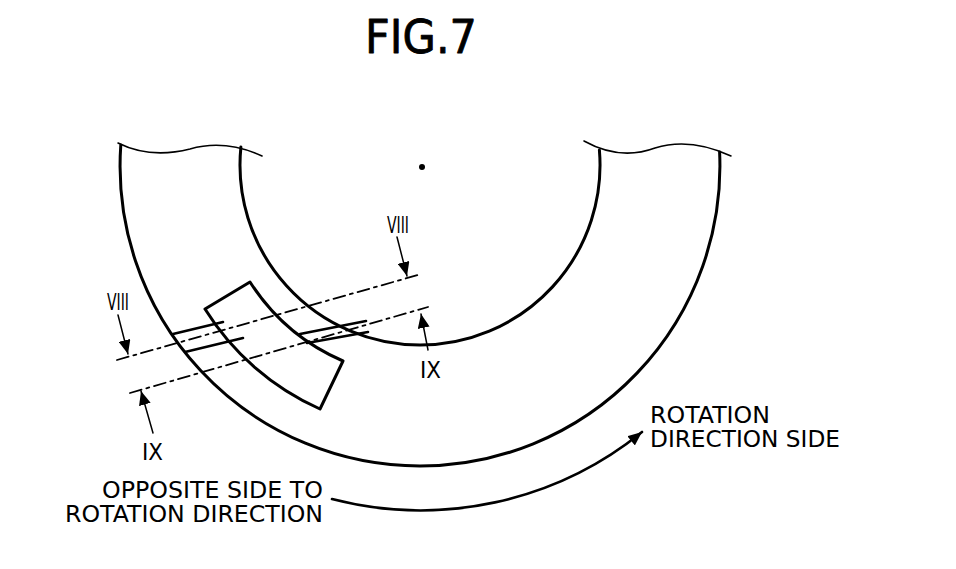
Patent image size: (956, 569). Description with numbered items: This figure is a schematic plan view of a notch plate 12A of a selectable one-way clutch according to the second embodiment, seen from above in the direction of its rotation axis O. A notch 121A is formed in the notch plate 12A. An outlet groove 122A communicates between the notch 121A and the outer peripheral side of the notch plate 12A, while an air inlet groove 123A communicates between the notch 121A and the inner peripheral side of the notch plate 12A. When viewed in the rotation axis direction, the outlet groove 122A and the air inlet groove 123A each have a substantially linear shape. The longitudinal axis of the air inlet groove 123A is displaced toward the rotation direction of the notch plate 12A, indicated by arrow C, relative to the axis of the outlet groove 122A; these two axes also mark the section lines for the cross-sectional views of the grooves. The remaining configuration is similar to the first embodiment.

The notch plate 12A is at (635, 347).
The notch 121A is at (205, 308).
The outlet groove 122A is at (185, 328).
The air inlet groove 123A is at (303, 333).
The axis O is at (422, 166).
The arrow C is at (560, 483).